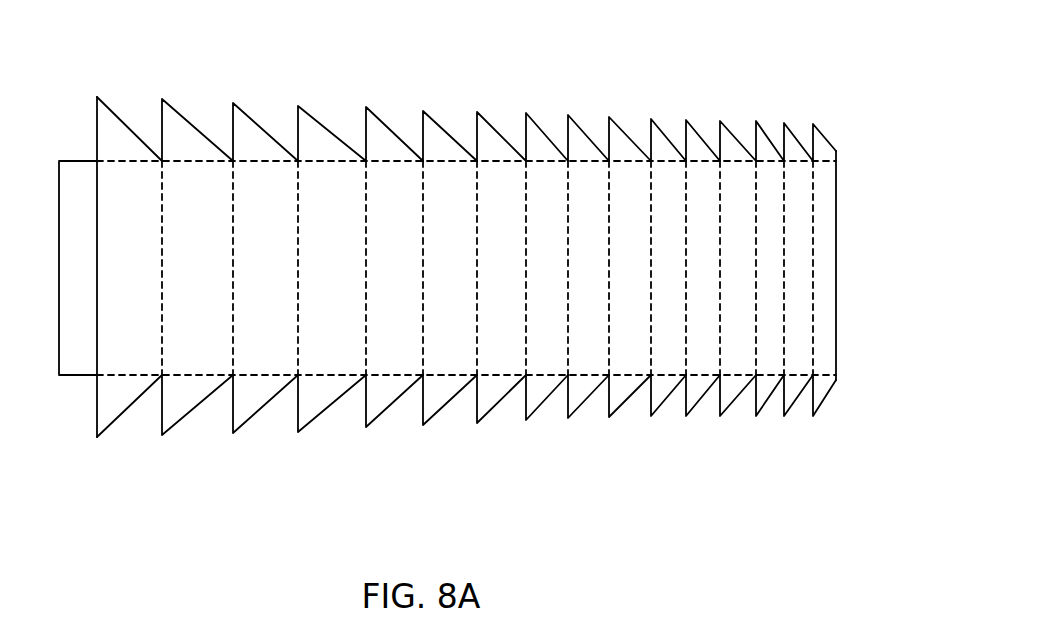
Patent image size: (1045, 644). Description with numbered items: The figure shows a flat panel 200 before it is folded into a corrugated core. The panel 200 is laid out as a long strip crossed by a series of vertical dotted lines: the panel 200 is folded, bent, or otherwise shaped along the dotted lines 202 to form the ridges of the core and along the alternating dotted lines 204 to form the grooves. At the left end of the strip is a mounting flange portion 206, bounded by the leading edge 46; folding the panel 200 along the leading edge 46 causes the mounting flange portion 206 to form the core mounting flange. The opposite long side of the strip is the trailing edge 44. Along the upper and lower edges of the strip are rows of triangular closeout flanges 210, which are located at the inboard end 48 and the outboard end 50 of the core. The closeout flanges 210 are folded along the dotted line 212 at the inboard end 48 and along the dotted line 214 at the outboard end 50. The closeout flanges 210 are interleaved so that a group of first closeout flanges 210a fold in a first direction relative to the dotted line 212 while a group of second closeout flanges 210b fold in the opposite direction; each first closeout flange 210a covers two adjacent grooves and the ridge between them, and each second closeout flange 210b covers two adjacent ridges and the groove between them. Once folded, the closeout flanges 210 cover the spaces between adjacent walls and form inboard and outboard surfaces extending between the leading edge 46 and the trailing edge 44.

The panel 200 is at (864, 106).
The dotted lines 202 is at (162, 218).
The dotted lines 204 is at (233, 246).
The mounting flange portion 206 is at (73, 168).
The closeout flanges 210 is at (253, 132).
The first closeout flanges 210a is at (112, 406).
The second closeout flanges 210b is at (172, 415).
The dotted lines 212 is at (275, 375).
The dotted lines 214 is at (393, 162).
The trailing edge 44 is at (836, 345).
The leading edge 46 is at (97, 288).
The inboard end 48 is at (113, 375).
The outboard end 50 is at (122, 161).